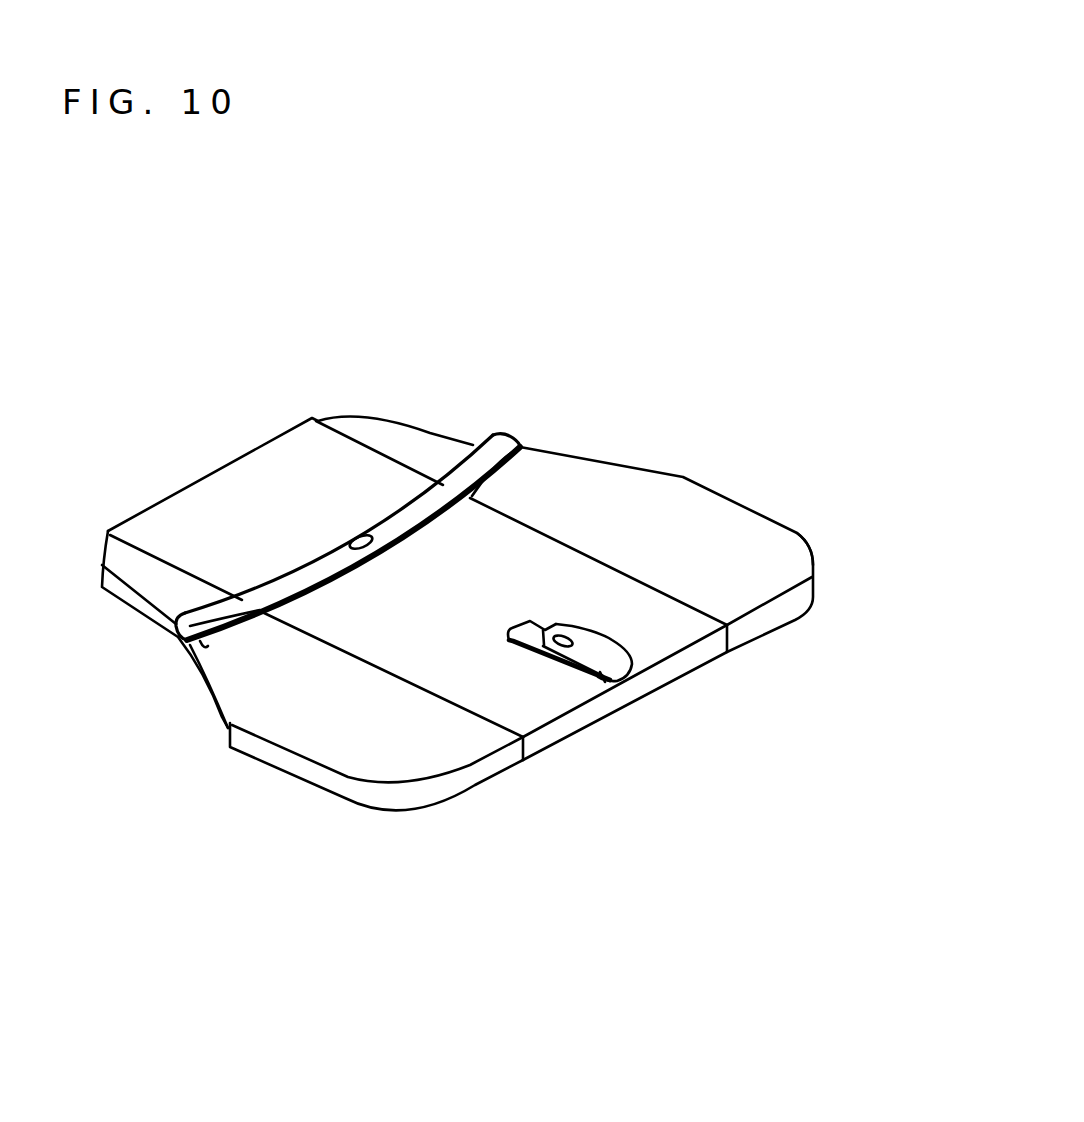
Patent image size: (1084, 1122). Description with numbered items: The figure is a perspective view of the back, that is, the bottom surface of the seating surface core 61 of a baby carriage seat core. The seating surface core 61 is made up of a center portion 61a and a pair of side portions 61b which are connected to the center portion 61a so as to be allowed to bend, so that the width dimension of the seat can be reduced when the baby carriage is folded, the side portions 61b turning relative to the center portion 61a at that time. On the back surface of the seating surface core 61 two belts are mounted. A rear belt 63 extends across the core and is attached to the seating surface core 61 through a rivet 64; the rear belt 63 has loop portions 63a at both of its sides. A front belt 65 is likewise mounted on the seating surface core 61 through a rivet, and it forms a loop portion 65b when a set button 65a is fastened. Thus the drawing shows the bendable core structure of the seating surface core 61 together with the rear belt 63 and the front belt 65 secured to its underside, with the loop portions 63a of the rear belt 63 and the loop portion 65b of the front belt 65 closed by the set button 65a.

The seating surface core 61 is at (643, 373).
The center portion 61a is at (552, 712).
The side portions 61b is at (763, 558).
The rear belt 63 is at (407, 513).
The loop portions 63a is at (520, 447).
The rivet 64 is at (350, 540).
The front belt 65 is at (509, 641).
The set button 65a is at (578, 634).
The loop portion 65b is at (607, 683).